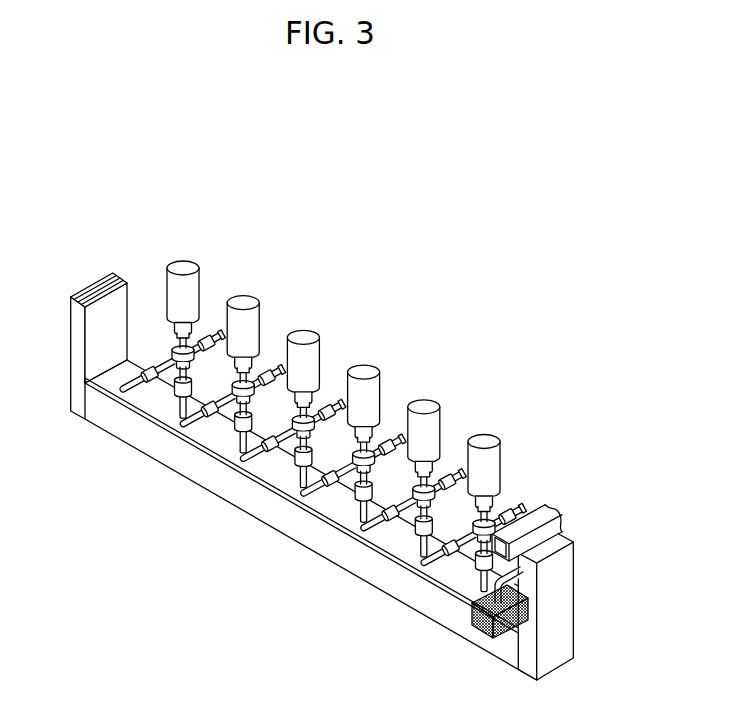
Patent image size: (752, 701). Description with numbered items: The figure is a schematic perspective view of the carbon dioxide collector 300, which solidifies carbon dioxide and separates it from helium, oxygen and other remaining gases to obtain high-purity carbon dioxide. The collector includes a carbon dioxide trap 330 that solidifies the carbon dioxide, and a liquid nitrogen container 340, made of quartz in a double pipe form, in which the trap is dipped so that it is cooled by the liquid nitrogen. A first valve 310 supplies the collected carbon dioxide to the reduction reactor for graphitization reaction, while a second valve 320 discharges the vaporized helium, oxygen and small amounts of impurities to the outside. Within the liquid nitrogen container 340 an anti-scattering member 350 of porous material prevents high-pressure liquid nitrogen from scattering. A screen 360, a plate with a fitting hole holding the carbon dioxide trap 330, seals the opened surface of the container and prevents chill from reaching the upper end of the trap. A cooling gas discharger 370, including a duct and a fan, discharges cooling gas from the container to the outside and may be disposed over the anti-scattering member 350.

The carbon dioxide collector 300 is at (441, 226).
The first valve 310 is at (148, 365).
The second valve 320 is at (264, 364).
The carbon dioxide trap 330 is at (177, 408).
The liquid nitrogen container 340 is at (412, 590).
The anti-scattering member 350 is at (483, 620).
The screen 360 is at (227, 445).
The cooling gas discharger 370 is at (545, 505).